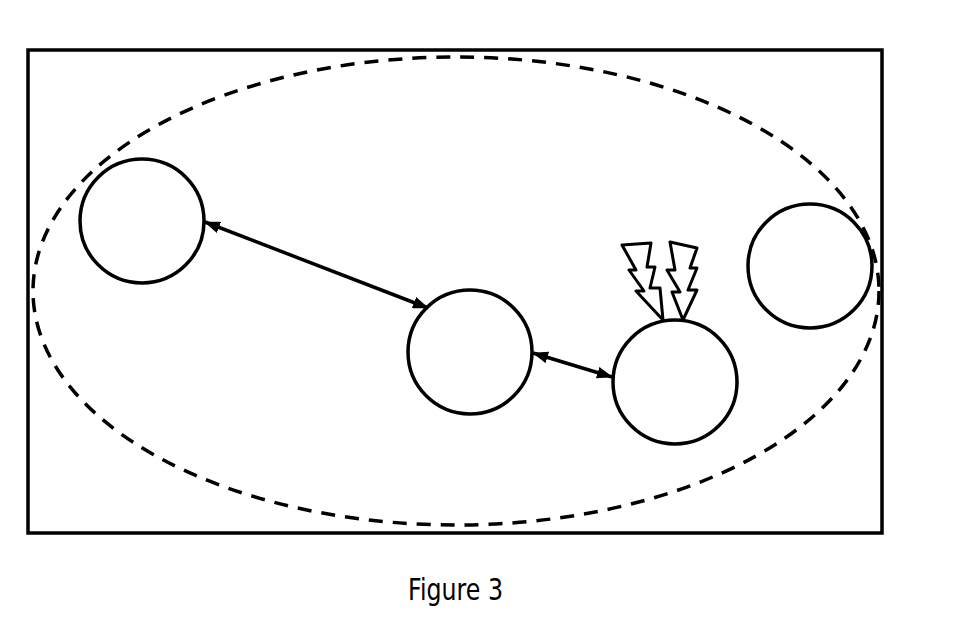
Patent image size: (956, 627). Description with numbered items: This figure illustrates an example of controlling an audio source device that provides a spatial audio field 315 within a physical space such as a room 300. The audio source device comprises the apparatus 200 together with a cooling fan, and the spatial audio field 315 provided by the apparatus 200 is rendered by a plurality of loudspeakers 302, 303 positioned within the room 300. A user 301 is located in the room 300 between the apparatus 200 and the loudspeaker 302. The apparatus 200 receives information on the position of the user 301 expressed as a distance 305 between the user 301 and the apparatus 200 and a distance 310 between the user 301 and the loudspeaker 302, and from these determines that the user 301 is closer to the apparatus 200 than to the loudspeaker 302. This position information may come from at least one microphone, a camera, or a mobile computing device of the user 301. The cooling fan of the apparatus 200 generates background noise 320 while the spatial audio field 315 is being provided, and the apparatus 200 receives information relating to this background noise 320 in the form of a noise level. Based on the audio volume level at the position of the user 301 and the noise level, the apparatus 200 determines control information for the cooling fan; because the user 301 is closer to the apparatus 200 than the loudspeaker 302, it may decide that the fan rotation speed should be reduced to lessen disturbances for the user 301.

The room 300 is at (825, 502).
The spatial audio field 315 is at (794, 146).
The loudspeaker 302 is at (173, 238).
The user 301 is at (501, 369).
The apparatus 200 is at (706, 399).
The loudspeaker 303 is at (841, 283).
The distance 310 is at (318, 257).
The distance 305 is at (566, 361).
The background noise 320 is at (651, 243).